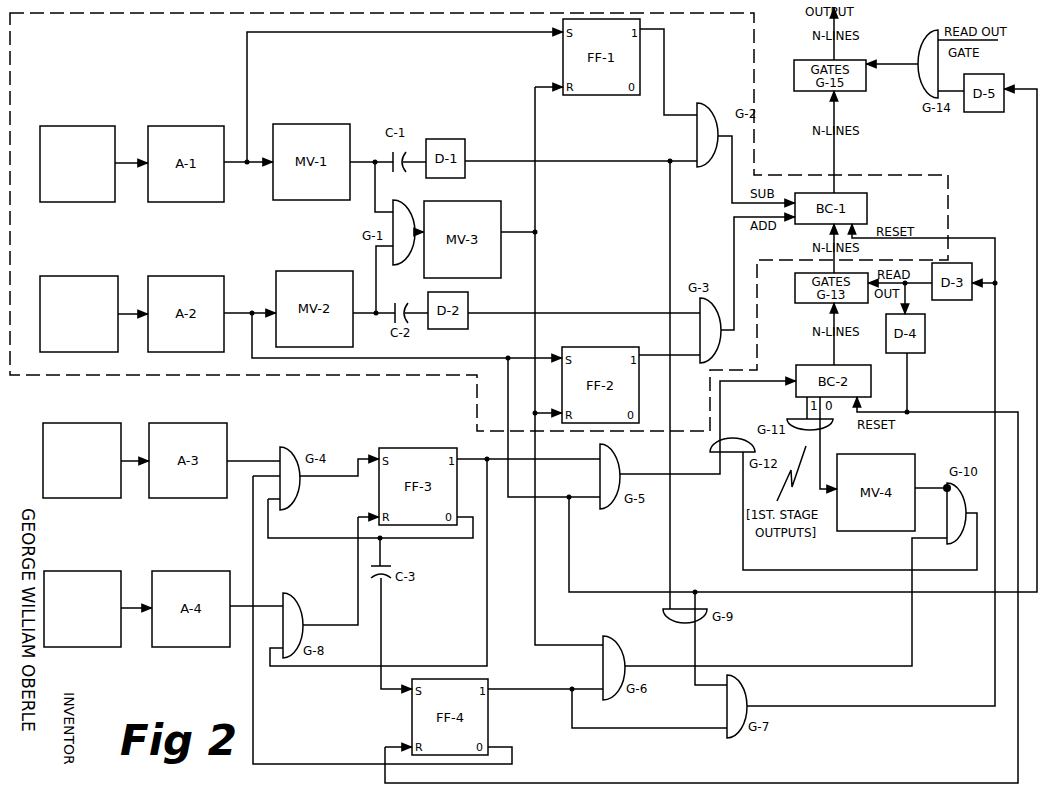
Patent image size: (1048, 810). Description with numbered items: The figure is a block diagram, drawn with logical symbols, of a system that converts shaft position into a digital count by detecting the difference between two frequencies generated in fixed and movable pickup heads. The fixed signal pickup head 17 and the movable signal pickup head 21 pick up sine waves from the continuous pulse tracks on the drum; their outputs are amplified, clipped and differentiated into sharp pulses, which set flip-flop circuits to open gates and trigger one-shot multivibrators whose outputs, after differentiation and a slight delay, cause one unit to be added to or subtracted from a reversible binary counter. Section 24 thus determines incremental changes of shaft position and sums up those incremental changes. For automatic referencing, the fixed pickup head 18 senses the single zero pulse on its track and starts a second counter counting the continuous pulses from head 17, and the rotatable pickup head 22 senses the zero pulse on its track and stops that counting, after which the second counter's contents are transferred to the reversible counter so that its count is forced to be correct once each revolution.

The section 24 is at (60, 49).
The movable signal pickup head 21 is at (77, 164).
The fixed signal pickup head 17 is at (79, 314).
The fixed pickup head 18 is at (82, 460).
The rotatable pickup head 22 is at (82, 609).